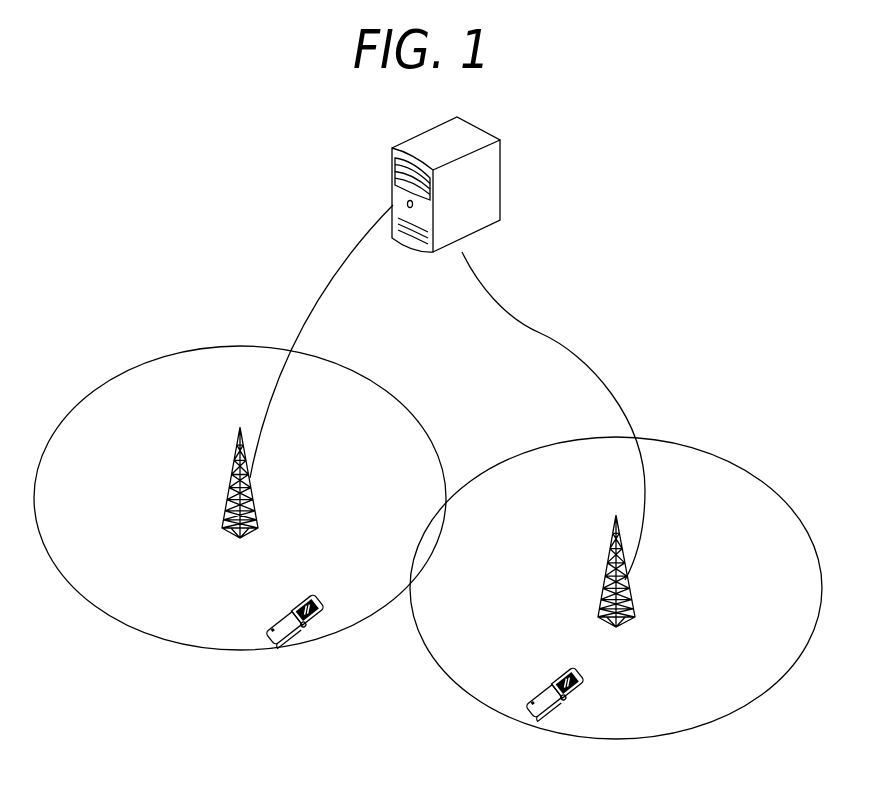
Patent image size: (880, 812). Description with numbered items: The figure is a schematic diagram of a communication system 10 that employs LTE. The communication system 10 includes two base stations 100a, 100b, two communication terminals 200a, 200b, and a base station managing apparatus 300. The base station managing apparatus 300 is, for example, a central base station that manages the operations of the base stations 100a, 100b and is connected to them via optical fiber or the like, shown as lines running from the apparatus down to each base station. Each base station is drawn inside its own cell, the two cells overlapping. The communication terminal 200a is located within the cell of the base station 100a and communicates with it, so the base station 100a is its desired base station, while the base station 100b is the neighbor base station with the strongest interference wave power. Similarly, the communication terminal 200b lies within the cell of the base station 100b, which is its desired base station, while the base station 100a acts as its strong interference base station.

The communication system 10 is at (228, 263).
The base station managing apparatus 300 is at (500, 172).
The base station 100a is at (228, 495).
The base station 100b is at (607, 576).
The communication terminal 200a is at (293, 613).
The communication terminal 200b is at (553, 682).